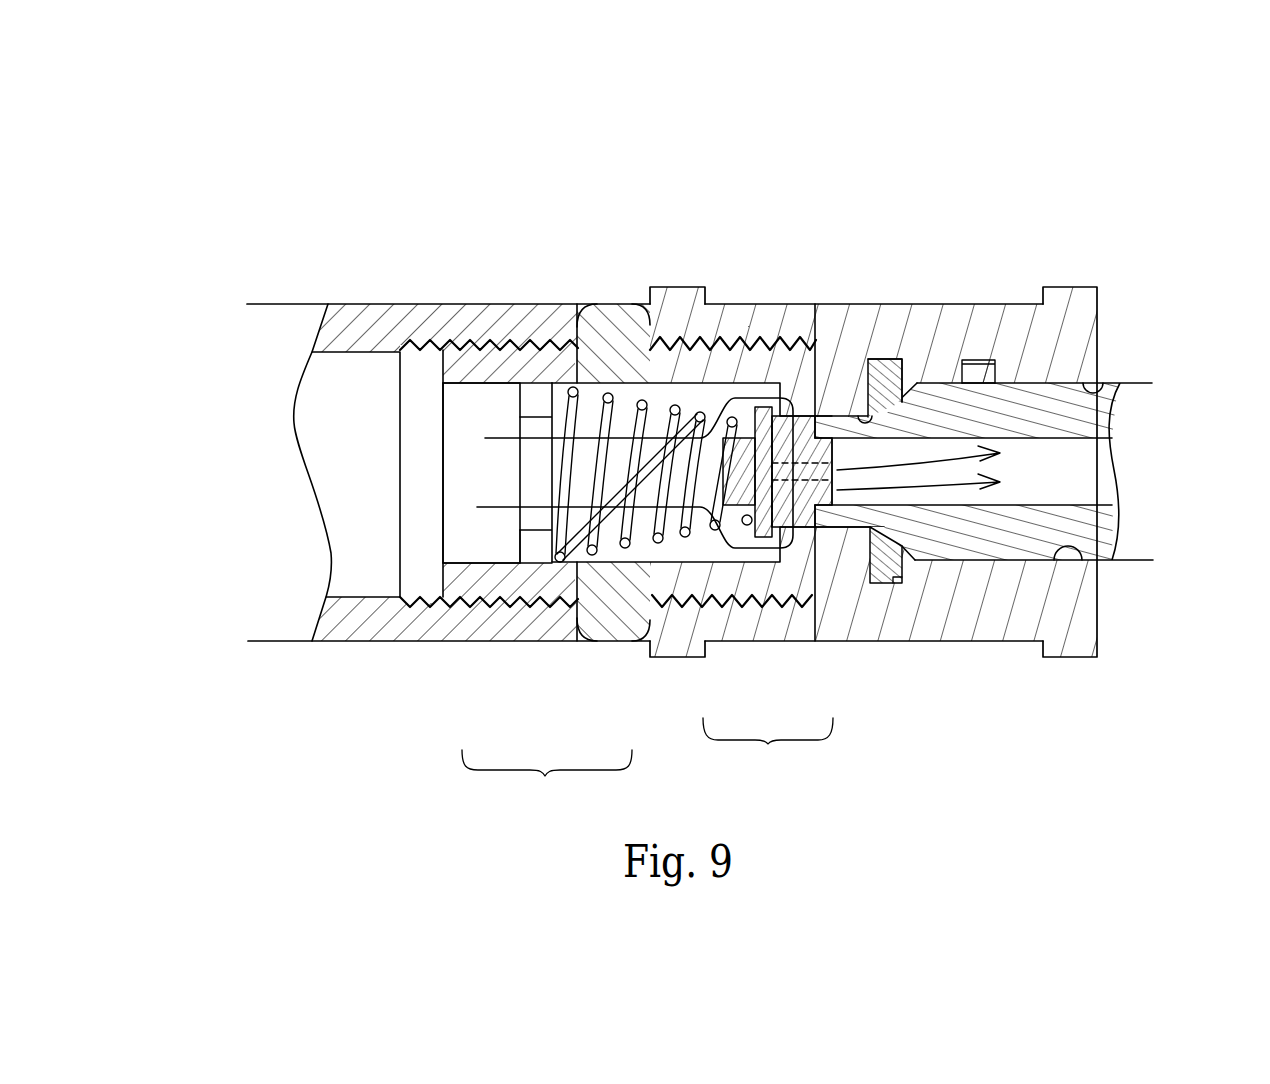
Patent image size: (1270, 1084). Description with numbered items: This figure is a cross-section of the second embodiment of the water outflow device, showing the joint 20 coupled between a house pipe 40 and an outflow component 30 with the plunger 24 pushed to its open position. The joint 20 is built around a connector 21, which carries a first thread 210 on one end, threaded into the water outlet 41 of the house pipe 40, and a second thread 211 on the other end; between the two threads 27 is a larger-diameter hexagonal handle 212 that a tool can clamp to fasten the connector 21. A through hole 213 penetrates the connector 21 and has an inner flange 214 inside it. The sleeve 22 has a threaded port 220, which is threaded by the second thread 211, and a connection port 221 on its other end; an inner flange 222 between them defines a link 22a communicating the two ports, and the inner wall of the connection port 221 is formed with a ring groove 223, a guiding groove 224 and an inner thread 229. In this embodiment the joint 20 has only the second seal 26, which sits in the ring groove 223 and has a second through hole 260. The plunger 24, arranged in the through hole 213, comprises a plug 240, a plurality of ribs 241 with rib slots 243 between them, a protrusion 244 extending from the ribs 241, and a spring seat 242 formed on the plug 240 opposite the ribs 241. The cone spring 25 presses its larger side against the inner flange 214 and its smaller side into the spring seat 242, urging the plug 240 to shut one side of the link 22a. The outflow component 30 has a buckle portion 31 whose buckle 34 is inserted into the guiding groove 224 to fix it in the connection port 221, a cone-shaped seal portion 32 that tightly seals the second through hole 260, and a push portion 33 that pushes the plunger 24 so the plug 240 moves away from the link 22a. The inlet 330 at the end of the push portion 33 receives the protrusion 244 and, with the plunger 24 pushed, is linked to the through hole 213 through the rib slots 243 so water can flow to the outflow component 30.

The joint 20 is at (623, 208).
The connector 21 is at (547, 780).
The first thread 210 is at (497, 590).
The second thread 211 is at (676, 608).
The handle 212 is at (598, 632).
The through hole 213 is at (622, 388).
The inner flange 214 is at (527, 538).
The sleeve 22 is at (1013, 633).
The threaded port 220 is at (707, 303).
The connection port 221 is at (1102, 380).
The inner flange 222 is at (858, 548).
The ring groove 223 is at (900, 580).
The guiding groove 224 is at (975, 368).
The inner thread 229 is at (1093, 557).
The link 22a is at (868, 415).
The plunger 24 is at (768, 750).
The plug 240 is at (760, 538).
The ribs 241 is at (813, 600).
The spring seat 242 is at (735, 505).
The rib slots 243 is at (800, 507).
The protrusion 244 is at (833, 457).
The spring 25 is at (608, 393).
The second seal 26 is at (893, 565).
The threads 27 is at (490, 340).
The outflow component 30 is at (1140, 381).
The buckle portion 31 is at (1067, 378).
The seal portion 32 is at (910, 380).
The push portion 33 is at (832, 415).
The inlet 330 is at (1103, 468).
The buckle 34 is at (988, 372).
The house pipe 40 is at (267, 641).
The water outlet 41 is at (398, 366).
The second through hole 260 is at (883, 421).